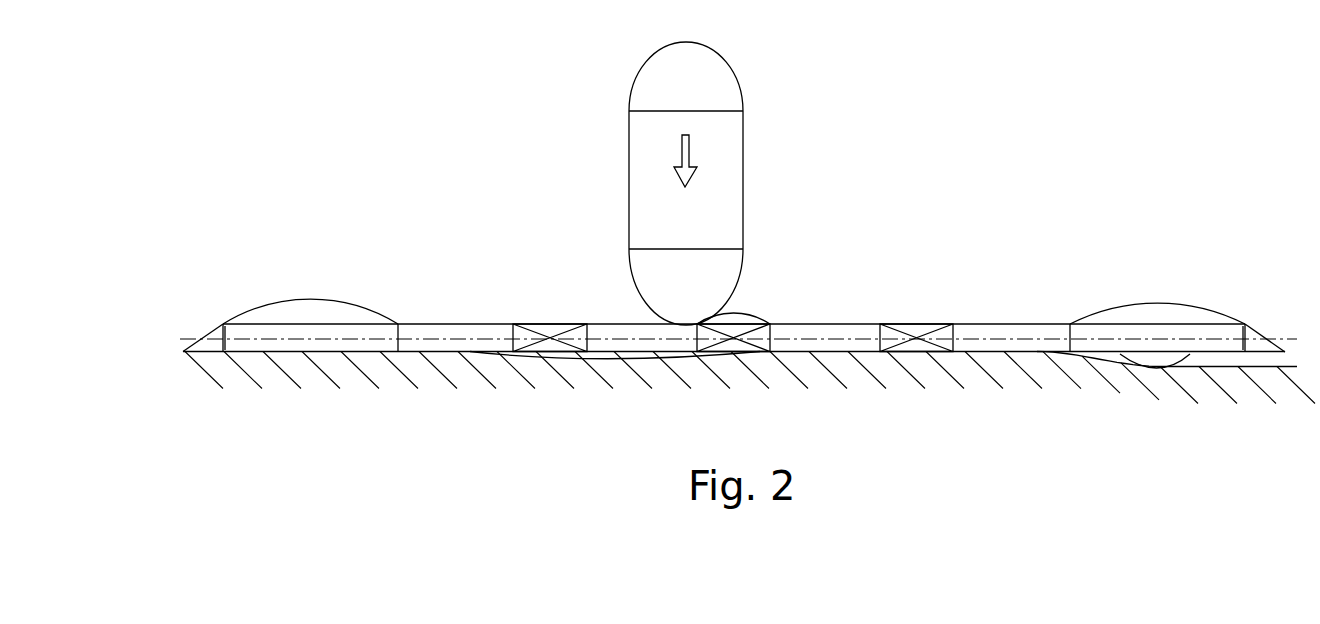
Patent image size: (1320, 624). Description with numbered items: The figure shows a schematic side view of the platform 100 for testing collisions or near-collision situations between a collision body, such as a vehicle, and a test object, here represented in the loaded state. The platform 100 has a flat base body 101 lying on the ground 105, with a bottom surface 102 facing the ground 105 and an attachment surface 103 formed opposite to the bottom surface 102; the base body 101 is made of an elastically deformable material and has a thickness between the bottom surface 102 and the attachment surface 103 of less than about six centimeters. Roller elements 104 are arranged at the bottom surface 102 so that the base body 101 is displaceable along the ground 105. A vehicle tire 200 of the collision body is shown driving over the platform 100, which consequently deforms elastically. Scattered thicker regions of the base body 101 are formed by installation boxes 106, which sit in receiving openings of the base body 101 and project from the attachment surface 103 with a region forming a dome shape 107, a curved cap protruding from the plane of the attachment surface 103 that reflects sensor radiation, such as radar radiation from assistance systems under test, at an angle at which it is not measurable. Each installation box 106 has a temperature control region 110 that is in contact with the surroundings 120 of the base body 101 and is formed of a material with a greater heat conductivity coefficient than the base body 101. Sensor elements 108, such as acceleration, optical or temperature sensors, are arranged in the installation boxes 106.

The platform 100 is at (183, 238).
The base body 101 is at (425, 323).
The bottom surface 102 is at (248, 355).
The attachment surface 103 is at (633, 322).
The roller element 104 is at (1158, 368).
The ground 105 is at (692, 427).
The installation box 106 is at (270, 313).
The dome shape 107 is at (310, 298).
The sensor element 108 is at (550, 357).
The temperature control region 110 is at (557, 323).
The surroundings 120 is at (973, 62).
The vehicle tire 200 is at (710, 72).